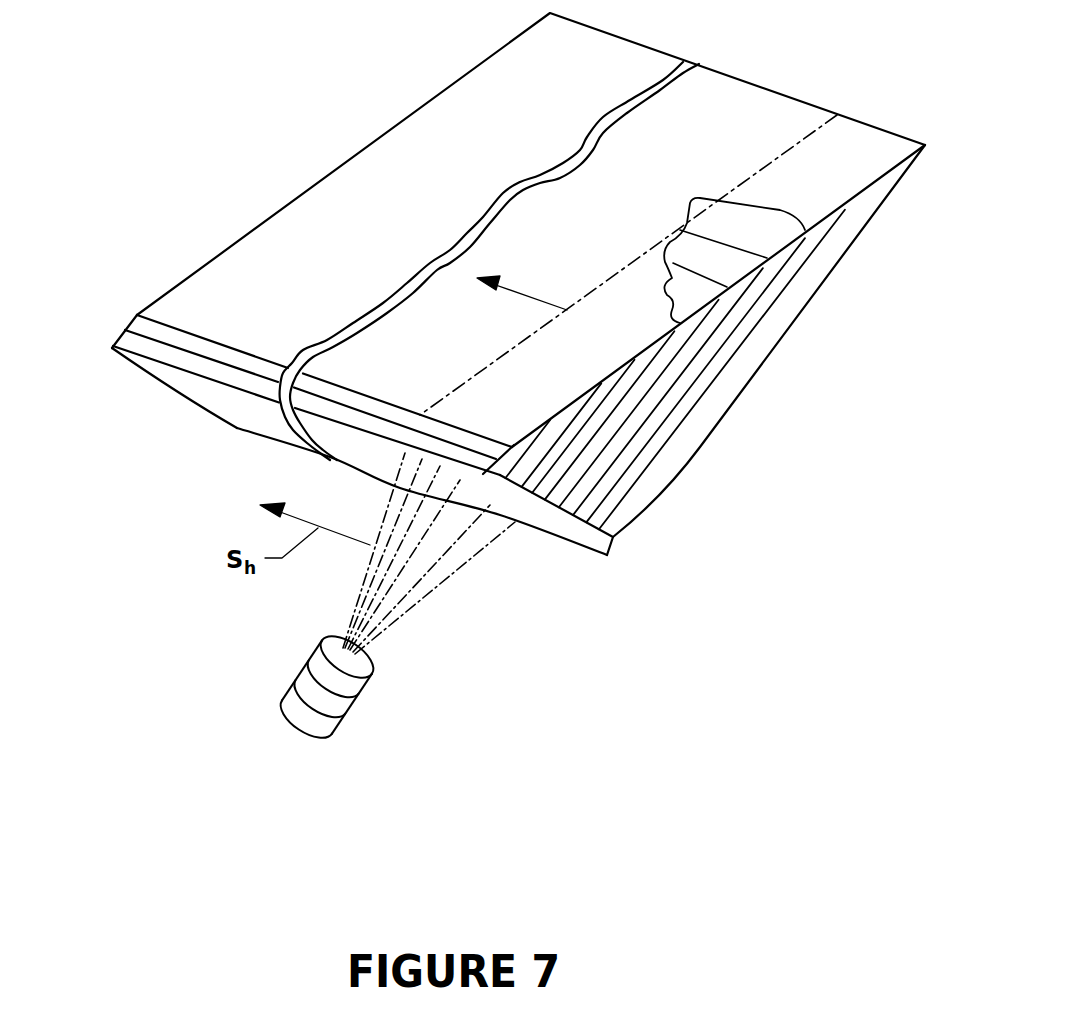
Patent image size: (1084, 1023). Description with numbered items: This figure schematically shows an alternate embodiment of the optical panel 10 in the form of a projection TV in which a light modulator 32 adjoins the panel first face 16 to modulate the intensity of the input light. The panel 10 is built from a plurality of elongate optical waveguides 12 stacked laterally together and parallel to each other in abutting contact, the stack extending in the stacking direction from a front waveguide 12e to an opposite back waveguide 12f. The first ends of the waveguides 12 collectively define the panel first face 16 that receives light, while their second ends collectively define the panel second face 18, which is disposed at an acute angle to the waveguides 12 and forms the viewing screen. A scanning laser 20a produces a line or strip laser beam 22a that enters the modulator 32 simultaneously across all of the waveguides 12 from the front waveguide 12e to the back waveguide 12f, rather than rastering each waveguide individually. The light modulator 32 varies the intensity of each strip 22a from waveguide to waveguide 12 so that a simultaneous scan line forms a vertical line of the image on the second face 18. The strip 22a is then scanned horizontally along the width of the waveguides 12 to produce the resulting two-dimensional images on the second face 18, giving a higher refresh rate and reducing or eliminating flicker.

The optical panel 10 is at (332, 155).
The optical waveguides 12 is at (738, 363).
The front waveguide 12e is at (148, 330).
The back waveguide 12f is at (673, 482).
The panel first face 16 is at (612, 534).
The panel second face 18 is at (725, 90).
The scanning laser 20a is at (355, 703).
The strip laser beam 22a is at (452, 483).
The light modulator 32 is at (538, 528).